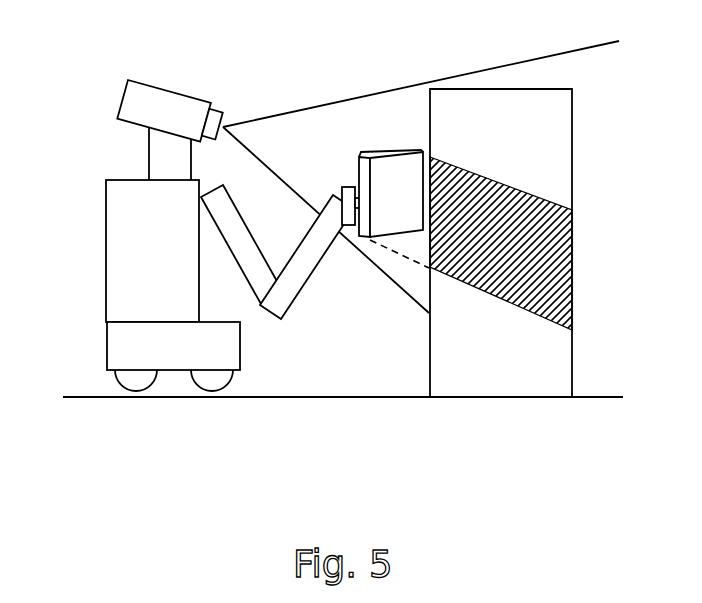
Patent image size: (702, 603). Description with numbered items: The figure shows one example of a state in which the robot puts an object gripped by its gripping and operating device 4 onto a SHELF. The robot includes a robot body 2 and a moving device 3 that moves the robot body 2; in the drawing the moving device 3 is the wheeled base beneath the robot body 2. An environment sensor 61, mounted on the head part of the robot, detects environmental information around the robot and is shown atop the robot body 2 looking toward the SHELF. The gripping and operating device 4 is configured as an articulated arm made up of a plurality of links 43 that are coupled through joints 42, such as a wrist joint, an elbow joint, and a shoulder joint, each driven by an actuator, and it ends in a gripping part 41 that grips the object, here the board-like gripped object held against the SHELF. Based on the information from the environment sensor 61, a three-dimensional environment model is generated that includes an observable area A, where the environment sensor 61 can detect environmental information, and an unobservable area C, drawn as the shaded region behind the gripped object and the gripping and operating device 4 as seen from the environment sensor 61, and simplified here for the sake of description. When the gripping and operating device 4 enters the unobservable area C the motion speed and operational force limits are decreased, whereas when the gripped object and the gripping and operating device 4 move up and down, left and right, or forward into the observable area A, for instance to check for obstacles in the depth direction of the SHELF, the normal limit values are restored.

The robot body 2 is at (118, 242).
The moving device 3 is at (118, 345).
The gripping and operating device 4 is at (277, 257).
The gripping part 41 is at (347, 185).
The joints 42 is at (223, 197).
The links 43 is at (243, 250).
The environment sensor 61 is at (223, 110).
The shelf SHELF is at (562, 102).
The observable area A is at (560, 145).
The unobservable area C is at (573, 272).